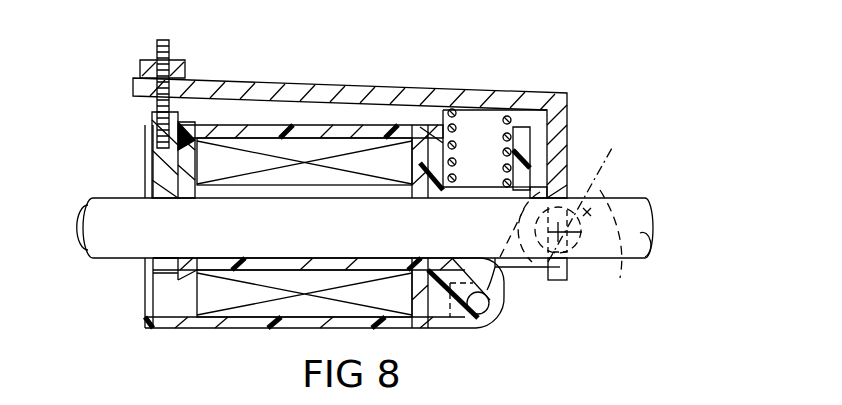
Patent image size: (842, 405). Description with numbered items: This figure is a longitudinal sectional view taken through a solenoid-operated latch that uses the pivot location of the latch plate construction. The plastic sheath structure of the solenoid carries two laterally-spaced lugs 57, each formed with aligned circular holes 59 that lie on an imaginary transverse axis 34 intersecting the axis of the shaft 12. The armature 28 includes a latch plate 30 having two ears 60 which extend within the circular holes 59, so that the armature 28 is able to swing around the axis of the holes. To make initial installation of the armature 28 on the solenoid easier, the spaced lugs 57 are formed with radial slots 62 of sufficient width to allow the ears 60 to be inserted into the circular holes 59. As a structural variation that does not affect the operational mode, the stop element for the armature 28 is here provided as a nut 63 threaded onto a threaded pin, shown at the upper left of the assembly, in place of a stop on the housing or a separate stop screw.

The shaft 12 is at (122, 258).
The armature 28 is at (567, 94).
The latch plate 30 is at (567, 130).
The transverse axis 34 is at (596, 199).
The lugs 57 is at (575, 262).
The circular holes 59 is at (520, 268).
The ears 60 is at (615, 265).
The radial slots 62 is at (600, 197).
The nut 63 is at (183, 62).